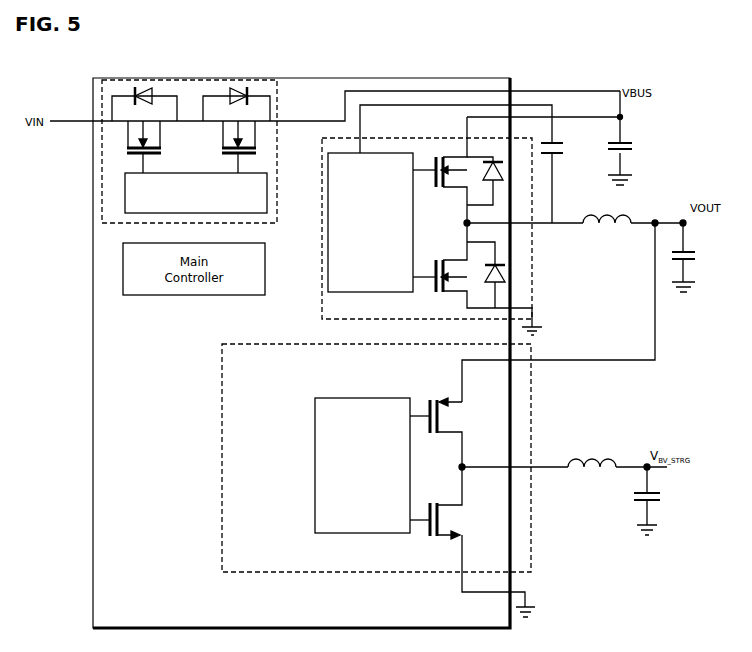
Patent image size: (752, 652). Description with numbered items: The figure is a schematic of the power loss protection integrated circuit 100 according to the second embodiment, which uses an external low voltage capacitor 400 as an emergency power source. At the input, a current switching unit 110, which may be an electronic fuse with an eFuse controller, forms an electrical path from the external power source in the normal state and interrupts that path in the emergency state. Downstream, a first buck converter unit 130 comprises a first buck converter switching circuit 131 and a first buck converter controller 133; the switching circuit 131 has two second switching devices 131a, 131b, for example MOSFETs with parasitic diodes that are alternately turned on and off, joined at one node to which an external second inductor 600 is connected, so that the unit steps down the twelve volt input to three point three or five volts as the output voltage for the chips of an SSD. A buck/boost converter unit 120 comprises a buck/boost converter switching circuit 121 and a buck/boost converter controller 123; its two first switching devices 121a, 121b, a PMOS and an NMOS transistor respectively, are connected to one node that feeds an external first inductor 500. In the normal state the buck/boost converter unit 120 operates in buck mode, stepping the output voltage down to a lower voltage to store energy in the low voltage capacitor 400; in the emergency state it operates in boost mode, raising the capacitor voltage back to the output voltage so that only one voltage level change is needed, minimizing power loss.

The power loss protection integrated circuit 100 is at (316, 72).
The current switching unit 110 is at (93, 200).
The buck/boost converter unit 120 is at (405, 573).
The buck/boost converter switching circuit 121 is at (445, 491).
The first switching device 121a is at (427, 398).
The first switching device 121b is at (426, 534).
The buck/boost converter controller 123 is at (335, 534).
The first buck converter unit 130 is at (320, 315).
The first buck converter switching circuit 131 is at (451, 226).
The second switching device 131a is at (433, 159).
The second switching device 131b is at (430, 288).
The first buck converter controller 133 is at (327, 268).
The low voltage capacitor 400 is at (660, 497).
The first inductor 500 is at (620, 462).
The second inductor 600 is at (632, 221).